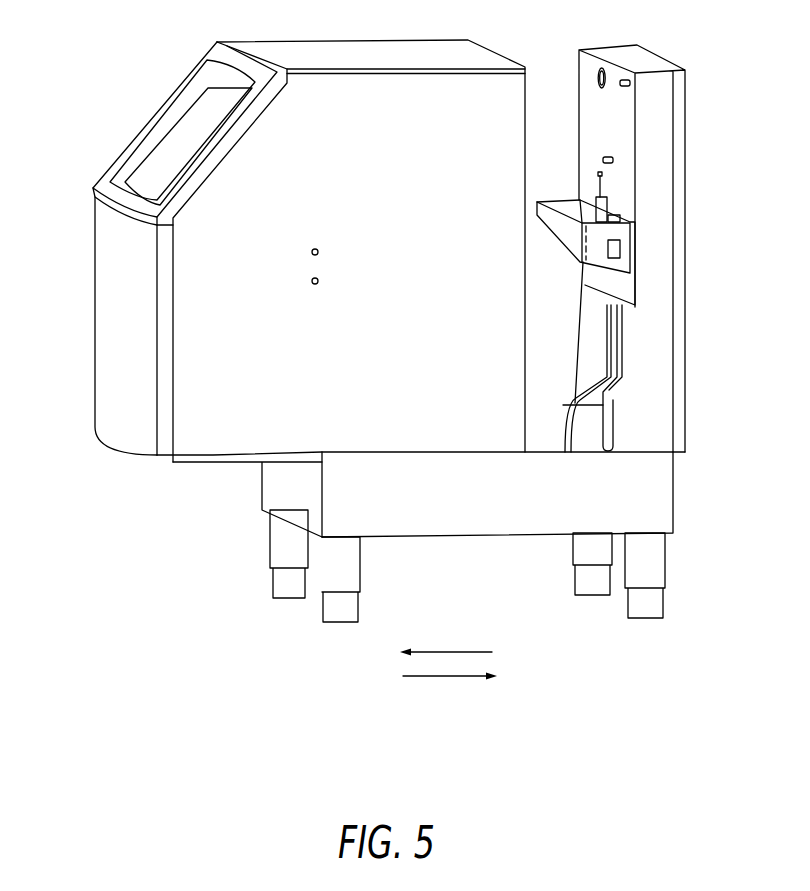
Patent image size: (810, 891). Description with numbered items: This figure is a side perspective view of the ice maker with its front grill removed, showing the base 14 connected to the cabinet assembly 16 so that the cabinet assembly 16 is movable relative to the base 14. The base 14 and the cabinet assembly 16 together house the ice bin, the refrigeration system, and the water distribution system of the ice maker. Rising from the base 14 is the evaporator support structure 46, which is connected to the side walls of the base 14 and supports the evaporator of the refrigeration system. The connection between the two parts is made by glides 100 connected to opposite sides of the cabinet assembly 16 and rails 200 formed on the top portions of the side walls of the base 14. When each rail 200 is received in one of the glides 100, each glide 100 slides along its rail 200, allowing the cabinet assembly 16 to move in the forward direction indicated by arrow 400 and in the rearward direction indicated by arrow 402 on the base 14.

The base 14 is at (643, 502).
The cabinet assembly 16 is at (120, 298).
The evaporator support structure 46 is at (620, 177).
The glide 100 is at (227, 462).
The rail 200 is at (540, 452).
The arrow 400 is at (460, 652).
The arrow 402 is at (438, 677).